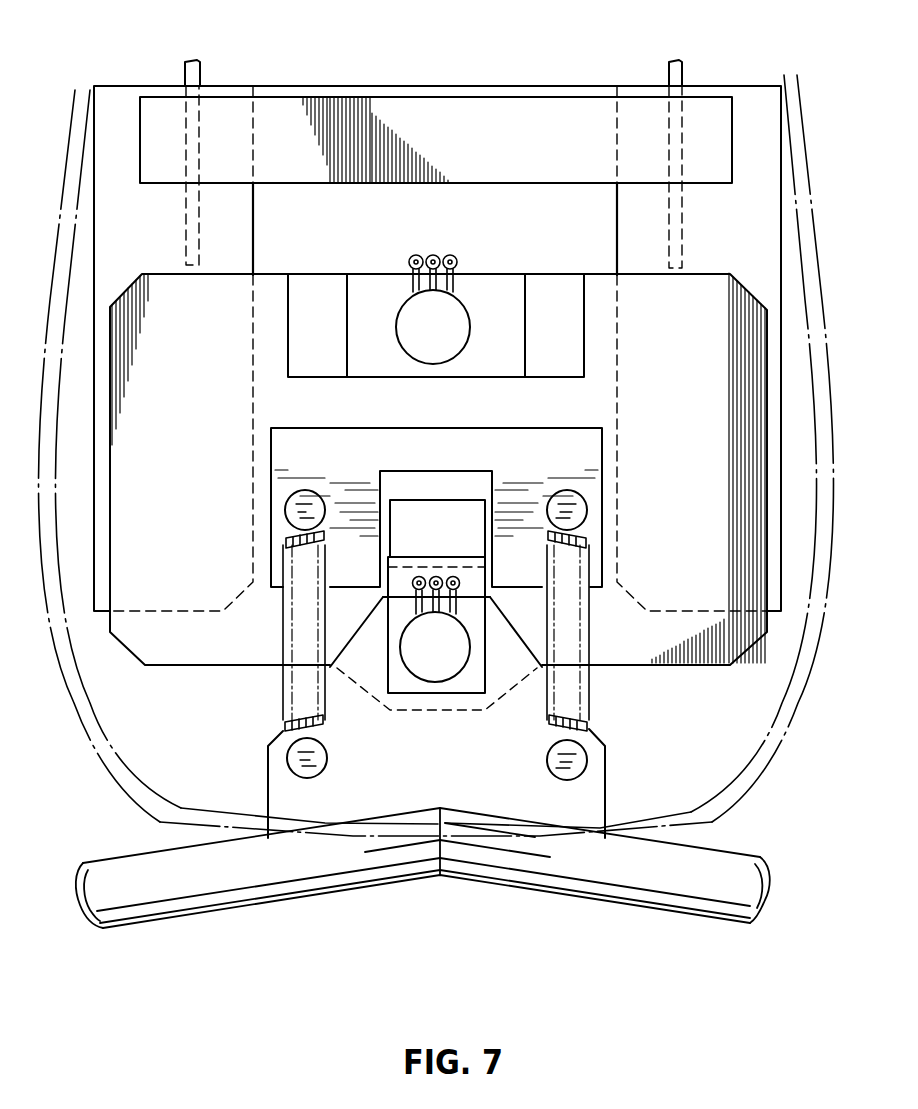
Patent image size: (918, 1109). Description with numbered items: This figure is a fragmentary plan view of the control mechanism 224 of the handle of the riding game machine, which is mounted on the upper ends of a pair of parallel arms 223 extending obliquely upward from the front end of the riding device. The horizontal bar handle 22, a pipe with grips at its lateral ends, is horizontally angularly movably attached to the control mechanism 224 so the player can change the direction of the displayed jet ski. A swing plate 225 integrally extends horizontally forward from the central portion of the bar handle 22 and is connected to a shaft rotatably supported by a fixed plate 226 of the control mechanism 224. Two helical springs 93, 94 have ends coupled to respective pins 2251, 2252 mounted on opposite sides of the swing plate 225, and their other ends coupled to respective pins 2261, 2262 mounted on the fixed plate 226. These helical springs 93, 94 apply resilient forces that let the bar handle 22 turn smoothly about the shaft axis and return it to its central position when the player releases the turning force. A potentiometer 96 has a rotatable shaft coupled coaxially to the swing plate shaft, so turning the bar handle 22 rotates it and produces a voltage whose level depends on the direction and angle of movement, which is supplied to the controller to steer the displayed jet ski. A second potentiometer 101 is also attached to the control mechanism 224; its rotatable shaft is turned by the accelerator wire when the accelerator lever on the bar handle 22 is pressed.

The bar handle 22 is at (695, 893).
The helical spring 93 is at (589, 636).
The helical spring 94 is at (283, 638).
The potentiometer 96 is at (428, 667).
The potentiometer 101 is at (443, 348).
The parallel arms 223 is at (187, 78).
The control mechanism 224 is at (269, 276).
The swing plate 225 is at (567, 808).
The fixed plate 226 is at (718, 650).
The pin 2251 is at (580, 760).
The pin 2252 is at (297, 765).
The pin 2261 is at (590, 508).
The pin 2262 is at (293, 516).